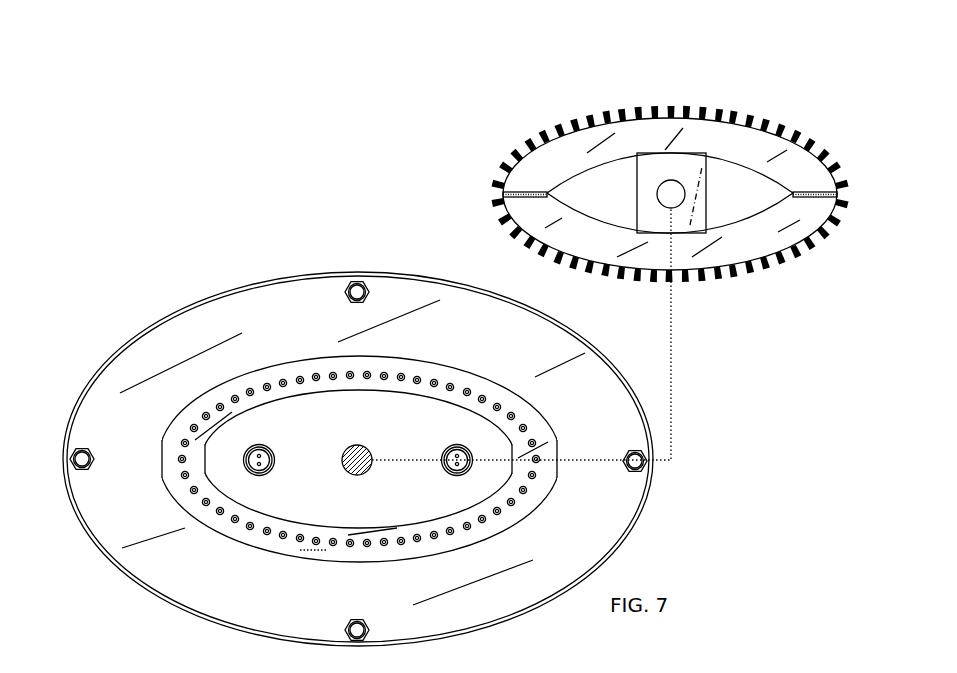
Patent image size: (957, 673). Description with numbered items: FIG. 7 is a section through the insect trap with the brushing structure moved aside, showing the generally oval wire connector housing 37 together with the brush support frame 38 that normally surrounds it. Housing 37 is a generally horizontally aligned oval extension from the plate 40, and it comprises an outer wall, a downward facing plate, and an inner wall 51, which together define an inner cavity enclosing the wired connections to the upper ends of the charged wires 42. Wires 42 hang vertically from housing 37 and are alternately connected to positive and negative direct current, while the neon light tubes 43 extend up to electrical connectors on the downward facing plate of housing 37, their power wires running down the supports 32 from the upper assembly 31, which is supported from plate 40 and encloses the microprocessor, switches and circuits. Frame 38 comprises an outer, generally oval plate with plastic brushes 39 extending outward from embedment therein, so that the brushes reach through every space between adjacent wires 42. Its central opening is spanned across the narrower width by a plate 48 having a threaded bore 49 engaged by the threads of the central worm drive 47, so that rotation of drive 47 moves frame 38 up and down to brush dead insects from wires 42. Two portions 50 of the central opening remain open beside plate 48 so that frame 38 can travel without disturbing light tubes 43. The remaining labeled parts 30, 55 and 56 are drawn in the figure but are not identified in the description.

The mounting plate 30 is at (226, 284).
The plate rim 31 is at (183, 315).
The fastener nuts 32 is at (348, 286).
The annular ring 37 is at (168, 434).
The brush ring body 38 is at (523, 208).
The bristles 39 is at (717, 103).
The plate surface 40 is at (170, 371).
The holes 42 is at (233, 529).
The hubs 43 is at (451, 471).
The center shaft 47 is at (353, 450).
The block 48 is at (642, 189).
The aperture 49 is at (657, 179).
The inner opening 50 is at (741, 192).
The inner ring edge 51 is at (222, 487).
The component 55 is at (585, 667).
The component 56 is at (520, 665).